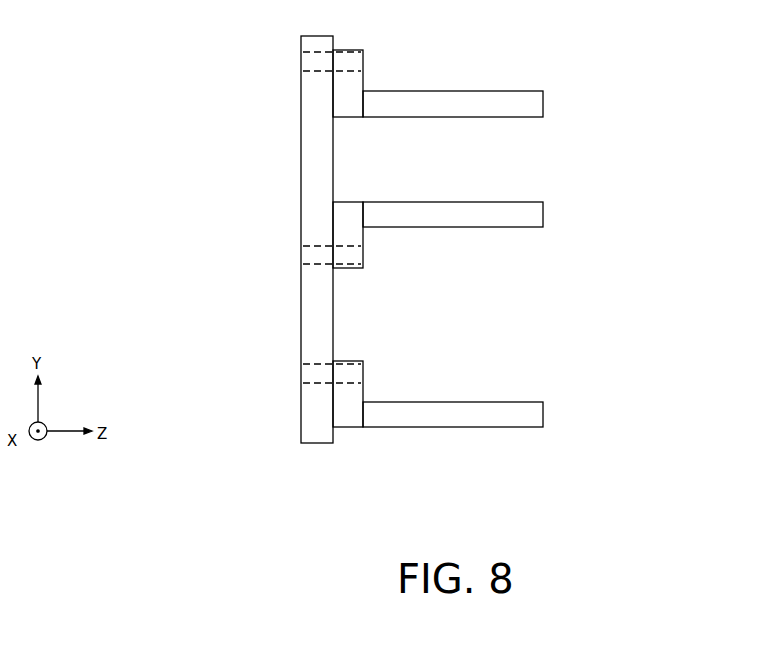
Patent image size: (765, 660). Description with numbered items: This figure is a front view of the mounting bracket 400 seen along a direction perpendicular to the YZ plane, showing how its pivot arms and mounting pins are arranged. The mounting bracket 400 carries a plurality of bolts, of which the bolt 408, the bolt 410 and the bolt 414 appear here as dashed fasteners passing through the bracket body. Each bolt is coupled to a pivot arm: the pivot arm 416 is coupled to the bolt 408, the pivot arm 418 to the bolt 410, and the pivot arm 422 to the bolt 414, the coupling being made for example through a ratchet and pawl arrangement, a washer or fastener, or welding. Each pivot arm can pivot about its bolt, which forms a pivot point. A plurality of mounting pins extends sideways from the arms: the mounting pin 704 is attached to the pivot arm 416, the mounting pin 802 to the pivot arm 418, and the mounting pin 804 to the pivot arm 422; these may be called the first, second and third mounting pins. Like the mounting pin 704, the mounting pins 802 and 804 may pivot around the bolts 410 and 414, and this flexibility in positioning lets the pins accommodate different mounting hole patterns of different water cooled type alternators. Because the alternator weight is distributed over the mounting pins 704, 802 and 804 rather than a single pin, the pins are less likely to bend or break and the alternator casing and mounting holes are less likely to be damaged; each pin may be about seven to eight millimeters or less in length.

The mounting bracket 400 is at (300, 153).
The bolt 408 is at (329, 375).
The bolt 410 is at (329, 257).
The bolt 414 is at (329, 64).
The pivot arm 416 is at (347, 413).
The pivot arm 418 is at (348, 222).
The pivot arm 422 is at (347, 95).
The mounting pin 704 is at (517, 415).
The mounting pin 802 is at (522, 213).
The mounting pin 804 is at (522, 105).